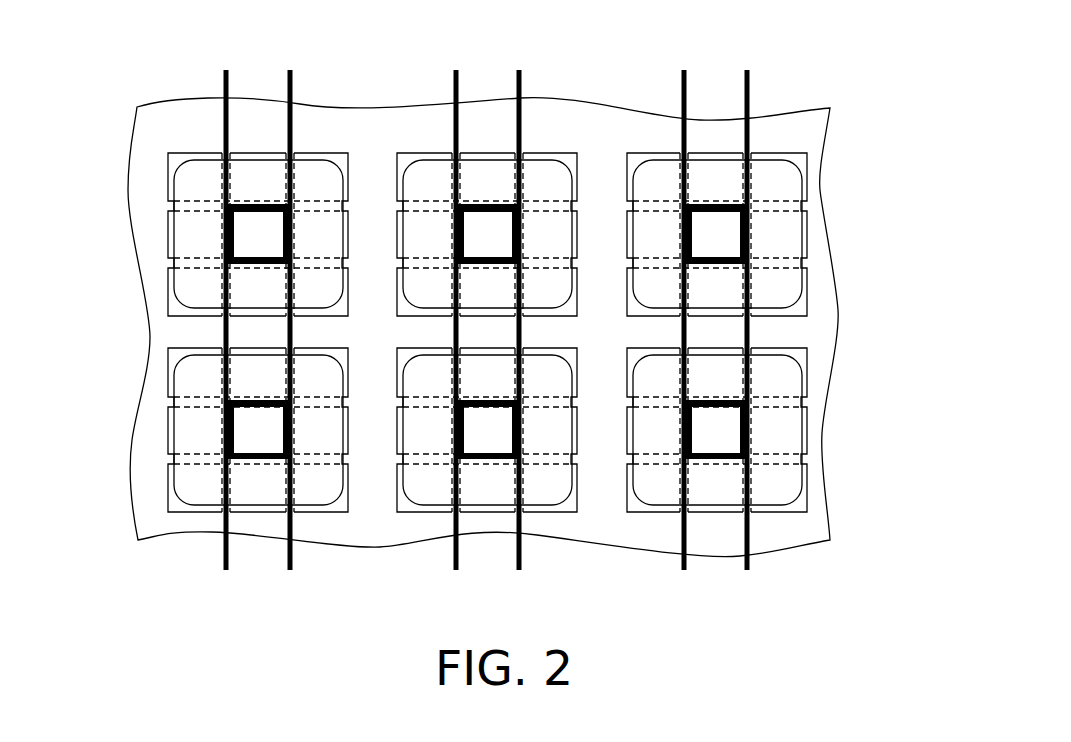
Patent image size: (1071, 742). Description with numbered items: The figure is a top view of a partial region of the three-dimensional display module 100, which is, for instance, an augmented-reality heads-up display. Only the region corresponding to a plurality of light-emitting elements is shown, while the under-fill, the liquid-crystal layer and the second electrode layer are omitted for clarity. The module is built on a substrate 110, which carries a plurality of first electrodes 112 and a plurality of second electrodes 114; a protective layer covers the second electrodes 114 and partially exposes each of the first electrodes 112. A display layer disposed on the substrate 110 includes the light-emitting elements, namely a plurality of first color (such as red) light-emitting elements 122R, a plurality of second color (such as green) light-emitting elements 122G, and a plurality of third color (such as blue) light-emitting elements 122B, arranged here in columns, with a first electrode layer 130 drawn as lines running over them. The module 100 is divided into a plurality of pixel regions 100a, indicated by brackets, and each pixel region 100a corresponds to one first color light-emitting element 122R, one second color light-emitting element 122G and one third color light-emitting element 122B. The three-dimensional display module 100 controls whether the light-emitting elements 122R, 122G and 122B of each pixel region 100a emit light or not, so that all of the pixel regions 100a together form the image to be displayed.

The three-dimensional display module 100 is at (904, 107).
The pixel region 100a is at (849, 153).
The substrate 110 is at (795, 122).
The first electrodes 112 is at (260, 200).
The second electrodes 114 is at (188, 152).
The first color light-emitting element 122R is at (182, 230).
The second color light-emitting element 122G is at (413, 162).
The third color light-emitting element 122B is at (637, 162).
The first electrode layer 130 is at (292, 93).